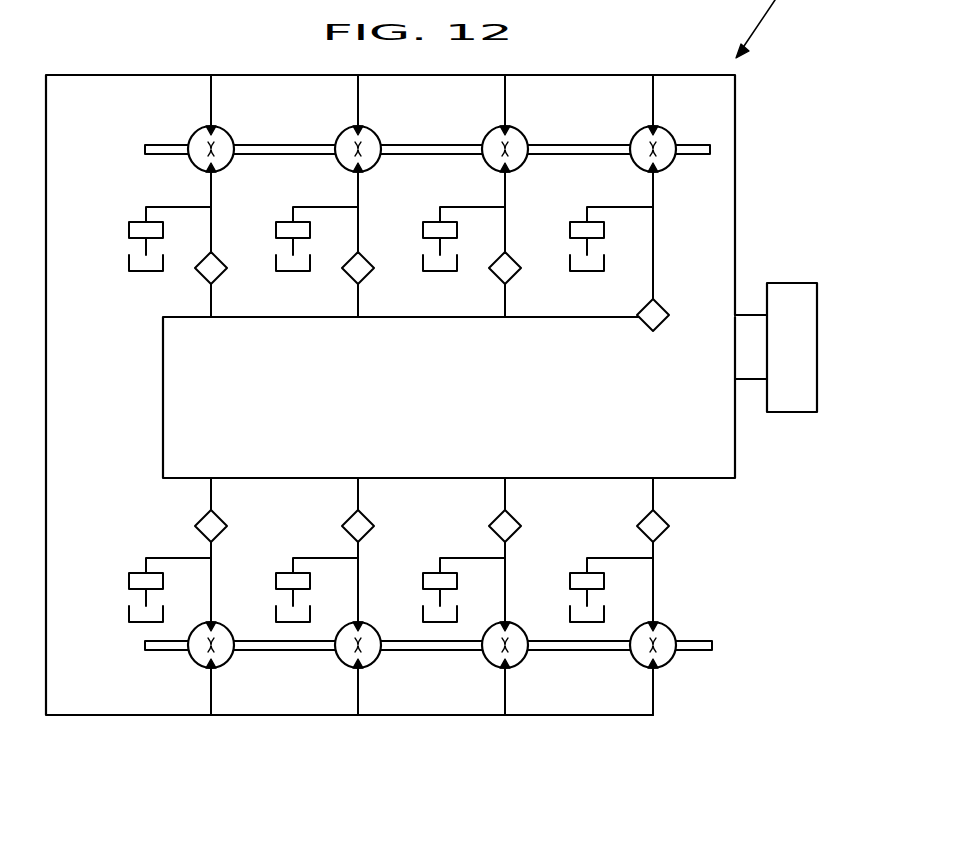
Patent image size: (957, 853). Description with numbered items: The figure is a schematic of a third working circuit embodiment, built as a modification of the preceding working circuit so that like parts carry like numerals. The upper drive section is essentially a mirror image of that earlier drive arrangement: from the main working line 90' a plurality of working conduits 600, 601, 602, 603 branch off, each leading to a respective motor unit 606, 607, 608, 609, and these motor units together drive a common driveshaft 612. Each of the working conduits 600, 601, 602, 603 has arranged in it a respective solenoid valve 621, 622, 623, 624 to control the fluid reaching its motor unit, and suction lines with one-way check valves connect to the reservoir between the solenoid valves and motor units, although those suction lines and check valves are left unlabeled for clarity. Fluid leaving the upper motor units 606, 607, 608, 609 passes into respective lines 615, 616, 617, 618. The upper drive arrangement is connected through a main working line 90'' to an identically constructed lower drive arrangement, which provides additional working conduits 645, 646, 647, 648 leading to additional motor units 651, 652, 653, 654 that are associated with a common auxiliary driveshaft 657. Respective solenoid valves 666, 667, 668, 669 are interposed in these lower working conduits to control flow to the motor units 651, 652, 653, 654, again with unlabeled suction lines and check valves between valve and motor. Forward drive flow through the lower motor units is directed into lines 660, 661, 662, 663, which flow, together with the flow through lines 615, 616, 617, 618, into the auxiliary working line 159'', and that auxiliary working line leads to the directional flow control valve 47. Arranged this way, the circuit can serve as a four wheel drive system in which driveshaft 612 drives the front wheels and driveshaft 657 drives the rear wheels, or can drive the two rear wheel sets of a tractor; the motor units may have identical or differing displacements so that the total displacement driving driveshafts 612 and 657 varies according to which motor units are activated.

The directional flow control valve 47 is at (797, 260).
The main working line 90' is at (692, 29).
The main working line 90'' is at (449, 397).
The auxiliary working line 159'' is at (390, 395).
The working conduit 600 is at (212, 230).
The working conduit 601 is at (359, 230).
The working conduit 602 is at (506, 237).
The working conduit 603 is at (655, 252).
The motor unit 606 is at (221, 144).
The motor unit 607 is at (369, 140).
The motor unit 608 is at (515, 139).
The motor unit 609 is at (660, 144).
The common driveshaft 612 is at (560, 156).
The line 615 is at (211, 108).
The line 616 is at (358, 102).
The line 617 is at (505, 110).
The line 618 is at (654, 96).
The solenoid valve 621 is at (212, 270).
The solenoid valve 622 is at (360, 270).
The solenoid valve 623 is at (507, 270).
The solenoid valve 624 is at (650, 322).
The additional working conduit 645 is at (653, 494).
The additional working conduit 646 is at (505, 497).
The additional working conduit 647 is at (358, 497).
The additional working conduit 648 is at (211, 495).
The additional motor unit 651 is at (665, 650).
The additional motor unit 652 is at (515, 650).
The additional motor unit 653 is at (367, 650).
The additional motor unit 654 is at (220, 650).
The common auxiliary driveshaft 657 is at (697, 632).
The line 660 is at (657, 690).
The line 661 is at (507, 700).
The line 662 is at (360, 700).
The line 663 is at (214, 700).
The solenoid valve 666 is at (656, 530).
The solenoid valve 667 is at (508, 530).
The solenoid valve 668 is at (361, 530).
The solenoid valve 669 is at (214, 530).